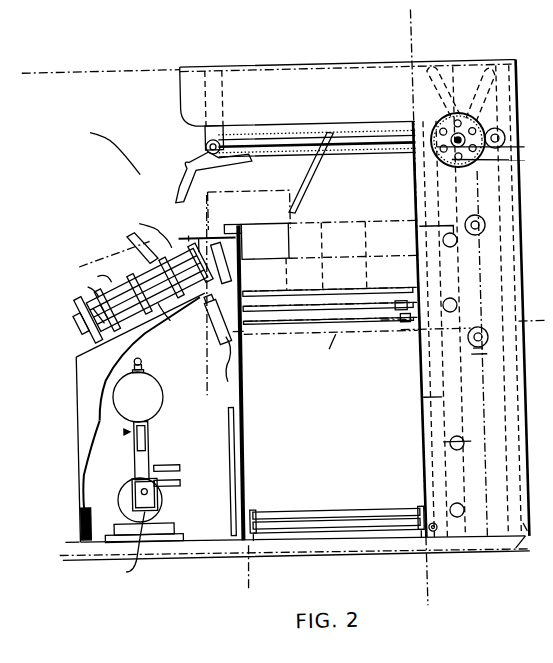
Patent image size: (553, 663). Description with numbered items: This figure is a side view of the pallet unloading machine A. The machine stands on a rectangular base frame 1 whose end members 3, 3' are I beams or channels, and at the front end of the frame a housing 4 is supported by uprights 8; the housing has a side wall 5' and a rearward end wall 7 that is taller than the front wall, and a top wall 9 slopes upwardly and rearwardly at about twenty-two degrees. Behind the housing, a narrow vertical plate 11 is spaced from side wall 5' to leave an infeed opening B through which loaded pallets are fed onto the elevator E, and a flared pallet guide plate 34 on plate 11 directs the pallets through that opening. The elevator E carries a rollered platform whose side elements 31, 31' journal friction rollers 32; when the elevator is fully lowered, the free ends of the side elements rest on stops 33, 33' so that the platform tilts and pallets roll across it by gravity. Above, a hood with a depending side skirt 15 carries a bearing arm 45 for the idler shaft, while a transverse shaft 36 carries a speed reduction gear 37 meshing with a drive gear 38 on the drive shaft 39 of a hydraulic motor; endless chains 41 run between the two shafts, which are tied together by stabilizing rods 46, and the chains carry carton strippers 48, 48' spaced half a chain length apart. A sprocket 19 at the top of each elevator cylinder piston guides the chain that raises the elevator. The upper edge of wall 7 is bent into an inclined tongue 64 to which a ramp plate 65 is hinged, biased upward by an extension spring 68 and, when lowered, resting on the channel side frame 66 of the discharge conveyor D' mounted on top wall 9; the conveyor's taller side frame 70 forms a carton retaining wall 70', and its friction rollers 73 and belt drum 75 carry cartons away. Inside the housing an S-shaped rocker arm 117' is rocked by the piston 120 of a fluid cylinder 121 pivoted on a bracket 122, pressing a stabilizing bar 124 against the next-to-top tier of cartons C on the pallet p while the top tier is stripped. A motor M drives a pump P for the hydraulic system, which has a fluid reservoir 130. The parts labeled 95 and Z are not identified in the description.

The base frame 1 is at (100, 560).
The end member 3 is at (279, 285).
The end member 3' is at (520, 548).
The housing 4 is at (406, 42).
The side wall 5' is at (70, 481).
The rearward end wall 7 is at (394, 314).
The uprights 8 is at (199, 211).
The top wall 9 is at (86, 352).
The vertical panel or plate 11 is at (487, 190).
The side skirt 15 is at (264, 78).
The sprocket 19 is at (237, 468).
The side element 31 is at (266, 497).
The side element 31' is at (413, 496).
The friction rollers 32 is at (300, 510).
The stop 33 is at (269, 559).
The stop 33' is at (421, 552).
The pallet guide plate 34 is at (418, 413).
The shaft 36 is at (496, 162).
The speed reduction gear 37 is at (478, 119).
The drive gear 38 is at (486, 150).
The drive shaft 39 is at (508, 140).
The endless chain 41 is at (370, 152).
The bearing arm 45 is at (208, 130).
The stabilizing rod 46 is at (326, 162).
The carton stripper 48 is at (200, 177).
The carton stripper 48' is at (461, 76).
The inclined tongue 64 is at (232, 205).
The ramp plate 65 is at (196, 236).
The side frame 66 is at (144, 231).
The extension spring 68 is at (211, 279).
The side frame 70 is at (97, 321).
The carton retaining wall 70' is at (69, 289).
The friction rollers 73 is at (127, 245).
The drum 75 is at (168, 308).
The rod 95 is at (98, 272).
The rocker arm 117' is at (329, 296).
The piston 120 is at (248, 333).
The fluid cylinder 121 is at (219, 360).
The bracket 122 is at (240, 340).
The carton clamping or stabilizing bar 124 is at (236, 224).
The fluid reservoir 130 is at (158, 395).
The pallet unloading machine A is at (103, 148).
The infeed opening B is at (318, 536).
The cartons C is at (343, 224).
The discharge conveyor D' is at (137, 293).
The elevator E is at (382, 510).
The motor M is at (166, 500).
The pump P is at (128, 551).
The base Z is at (168, 552).
The pallet p is at (327, 347).